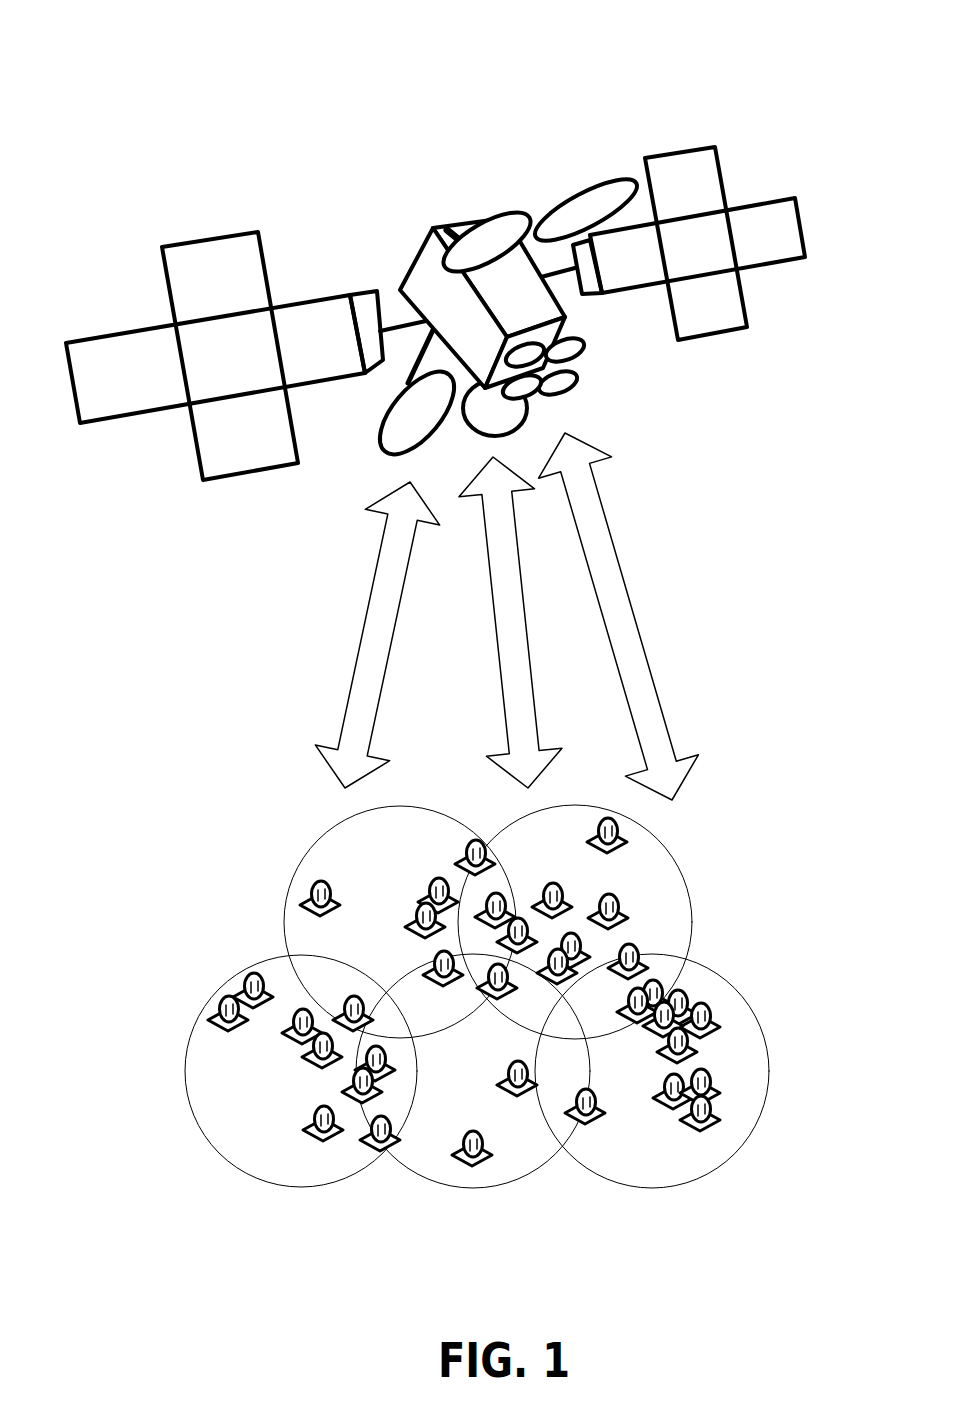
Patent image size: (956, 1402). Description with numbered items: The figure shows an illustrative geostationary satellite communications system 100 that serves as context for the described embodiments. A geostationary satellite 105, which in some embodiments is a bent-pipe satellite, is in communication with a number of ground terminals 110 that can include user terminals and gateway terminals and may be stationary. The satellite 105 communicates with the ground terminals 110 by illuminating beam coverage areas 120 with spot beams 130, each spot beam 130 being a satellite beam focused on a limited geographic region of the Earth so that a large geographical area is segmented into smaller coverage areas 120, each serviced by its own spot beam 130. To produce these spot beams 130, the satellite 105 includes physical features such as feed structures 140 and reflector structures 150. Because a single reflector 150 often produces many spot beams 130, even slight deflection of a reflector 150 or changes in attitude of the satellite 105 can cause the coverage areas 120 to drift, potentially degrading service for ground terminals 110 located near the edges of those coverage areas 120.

The geostationary satellite communications system 100 is at (166, 55).
The geostationary satellite 105 is at (447, 224).
The ground terminals 110 is at (327, 880).
The beam coverage areas 120 is at (683, 877).
The spot beams 130 is at (613, 553).
The feed structures 140 is at (556, 403).
The reflector structures 150 is at (590, 182).